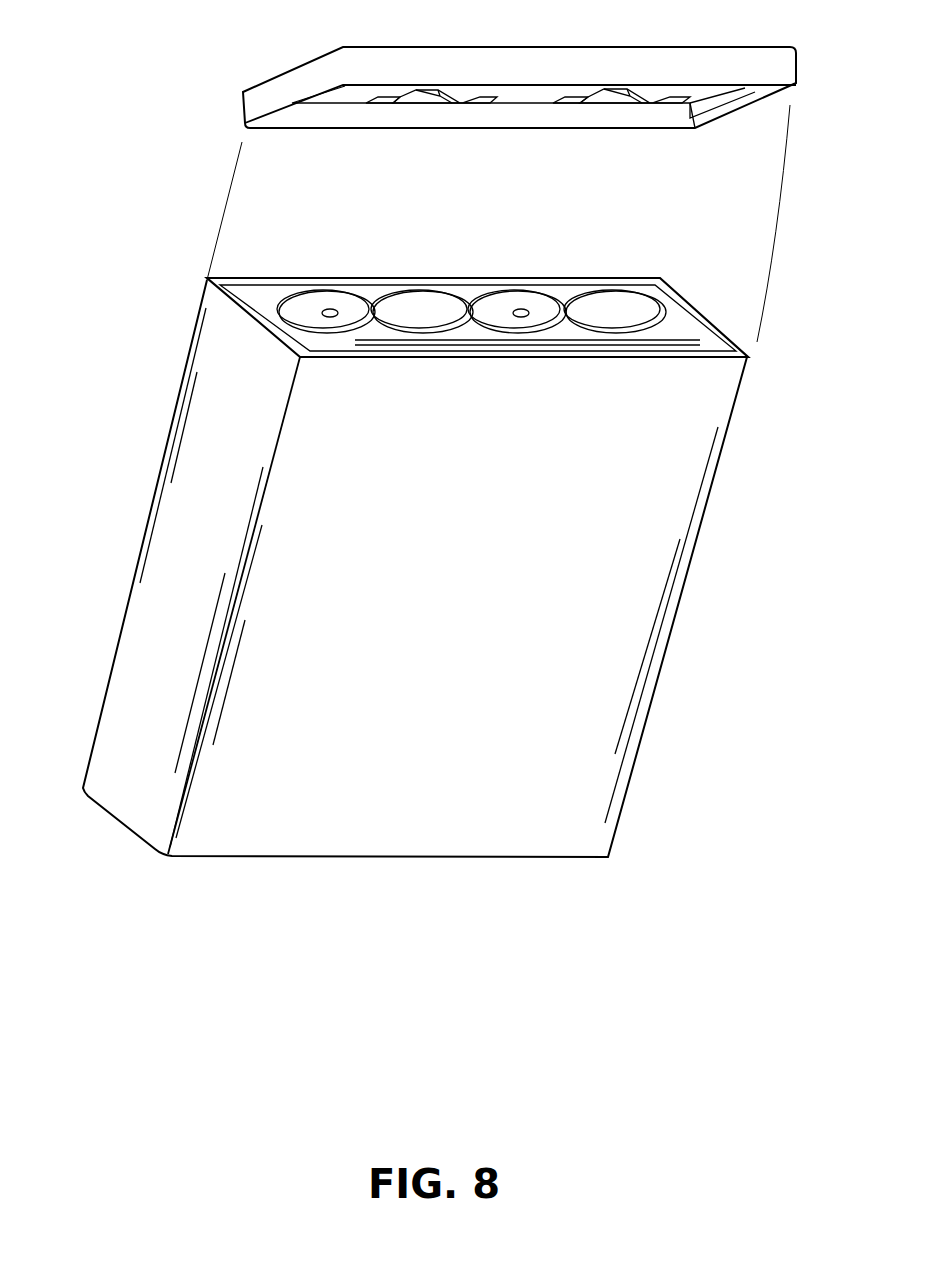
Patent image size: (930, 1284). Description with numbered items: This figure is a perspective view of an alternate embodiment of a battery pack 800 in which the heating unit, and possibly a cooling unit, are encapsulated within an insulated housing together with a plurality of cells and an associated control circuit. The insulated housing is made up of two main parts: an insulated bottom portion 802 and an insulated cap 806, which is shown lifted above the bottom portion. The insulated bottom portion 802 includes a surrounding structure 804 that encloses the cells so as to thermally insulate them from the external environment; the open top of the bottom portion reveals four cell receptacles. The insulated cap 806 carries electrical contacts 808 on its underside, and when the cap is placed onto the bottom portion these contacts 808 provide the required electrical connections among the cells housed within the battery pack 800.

The battery pack 800 is at (163, 905).
The insulated bottom portion 802 is at (185, 450).
The insulating structure of the bottom portion 804 is at (237, 292).
The insulated cap 806 is at (270, 92).
The electrical contacts 808 is at (476, 106).